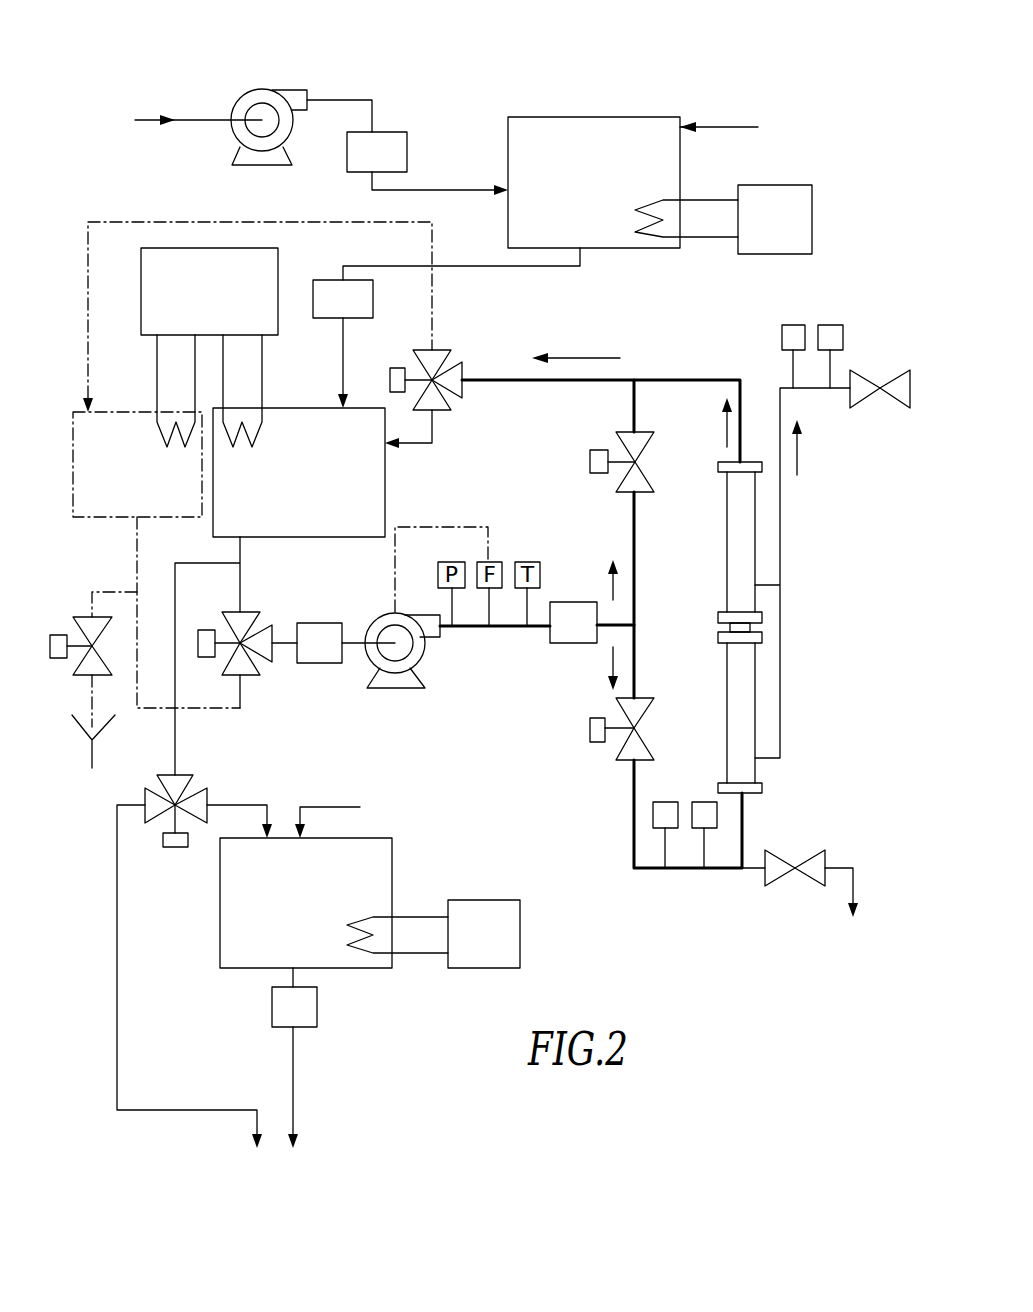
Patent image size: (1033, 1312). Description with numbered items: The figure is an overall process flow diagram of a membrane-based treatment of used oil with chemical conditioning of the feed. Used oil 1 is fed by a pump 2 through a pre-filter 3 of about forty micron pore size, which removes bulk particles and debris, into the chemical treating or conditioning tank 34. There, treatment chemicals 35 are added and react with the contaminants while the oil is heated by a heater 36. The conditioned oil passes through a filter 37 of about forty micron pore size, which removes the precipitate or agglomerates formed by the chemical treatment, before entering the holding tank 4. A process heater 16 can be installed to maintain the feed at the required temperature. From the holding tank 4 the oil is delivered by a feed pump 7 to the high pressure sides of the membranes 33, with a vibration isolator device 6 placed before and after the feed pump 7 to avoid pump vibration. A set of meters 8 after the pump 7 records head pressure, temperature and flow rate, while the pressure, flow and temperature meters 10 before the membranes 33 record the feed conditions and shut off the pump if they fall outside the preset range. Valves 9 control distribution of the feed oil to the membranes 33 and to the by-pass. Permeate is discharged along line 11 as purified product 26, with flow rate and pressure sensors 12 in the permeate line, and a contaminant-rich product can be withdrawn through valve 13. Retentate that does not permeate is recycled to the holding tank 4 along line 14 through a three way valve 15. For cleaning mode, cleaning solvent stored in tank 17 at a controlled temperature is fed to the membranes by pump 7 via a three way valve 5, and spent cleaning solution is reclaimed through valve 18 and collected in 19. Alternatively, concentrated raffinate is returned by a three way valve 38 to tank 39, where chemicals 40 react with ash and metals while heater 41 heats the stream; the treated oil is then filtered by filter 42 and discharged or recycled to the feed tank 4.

The used oil 1 is at (192, 120).
The pump 2 is at (255, 90).
The pre-filter 3 is at (407, 152).
The holding tank 4 is at (385, 470).
The three way valve 5 is at (243, 612).
The vibration isolator device 6 is at (570, 602).
The feed pump 7 is at (425, 650).
The set of meters 8 is at (500, 540).
The valves 9 is at (590, 456).
The pressure, flow and temperature meters 10 is at (687, 788).
The permeate line 11 is at (780, 522).
The flow rate and pressure sensors 12 is at (820, 312).
The valve 13 is at (855, 892).
The line 14 is at (668, 380).
The three way valve 15 is at (435, 350).
The process heater 16 is at (141, 290).
The tank 17 is at (120, 412).
The valve 18 is at (75, 617).
The collection 19 is at (92, 755).
The purified product 26 is at (870, 370).
The membranes 33 is at (723, 533).
The chemical treating tank 34 is at (580, 117).
The treatment chemicals 35 is at (757, 127).
The heater 36 is at (768, 185).
The filter 37 is at (318, 280).
The three way valve 38 is at (205, 790).
The tank 39 is at (220, 880).
The chemicals 40 is at (333, 807).
The heater 41 is at (490, 900).
The filter 42 is at (317, 1000).